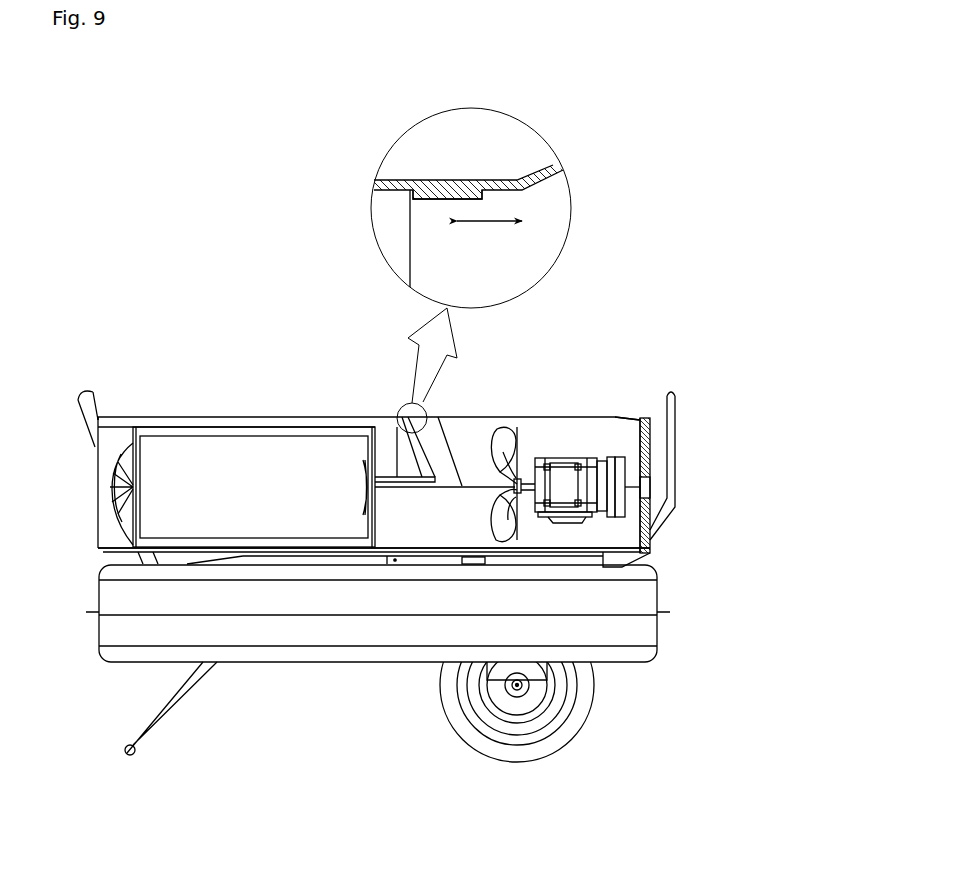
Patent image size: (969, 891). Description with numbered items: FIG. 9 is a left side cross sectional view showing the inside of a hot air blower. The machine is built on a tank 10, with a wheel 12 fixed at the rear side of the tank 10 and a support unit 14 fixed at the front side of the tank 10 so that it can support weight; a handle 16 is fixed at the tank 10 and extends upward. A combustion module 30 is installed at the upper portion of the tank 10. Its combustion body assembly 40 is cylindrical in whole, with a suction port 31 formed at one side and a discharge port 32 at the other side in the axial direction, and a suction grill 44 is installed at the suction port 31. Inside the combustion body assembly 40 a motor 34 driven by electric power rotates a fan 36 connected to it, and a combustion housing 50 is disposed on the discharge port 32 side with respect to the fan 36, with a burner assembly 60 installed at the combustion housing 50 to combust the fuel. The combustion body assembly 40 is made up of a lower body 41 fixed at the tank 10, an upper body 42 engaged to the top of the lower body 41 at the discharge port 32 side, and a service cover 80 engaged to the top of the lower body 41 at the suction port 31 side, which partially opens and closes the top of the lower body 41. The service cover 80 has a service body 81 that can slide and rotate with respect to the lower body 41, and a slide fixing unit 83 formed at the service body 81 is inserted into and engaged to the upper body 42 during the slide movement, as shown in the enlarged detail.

The tank 10 is at (658, 664).
The wheel 12 is at (580, 720).
The support unit 14 is at (184, 699).
The handle 16 is at (84, 395).
The combustion module 30 is at (303, 388).
The suction port 31 is at (623, 441).
The discharge port 32 is at (117, 452).
The motor 34 is at (588, 455).
The fan 36 is at (513, 440).
The combustion body assembly 40 is at (318, 415).
The lower body 41 is at (118, 551).
The upper body 42 is at (428, 180).
The suction grill 44 is at (651, 447).
The combustion housing 50 is at (352, 426).
The burner assembly 60 is at (356, 466).
The service cover 80 is at (560, 413).
The service body 81 is at (538, 180).
The slide fixing unit 83 is at (440, 200).